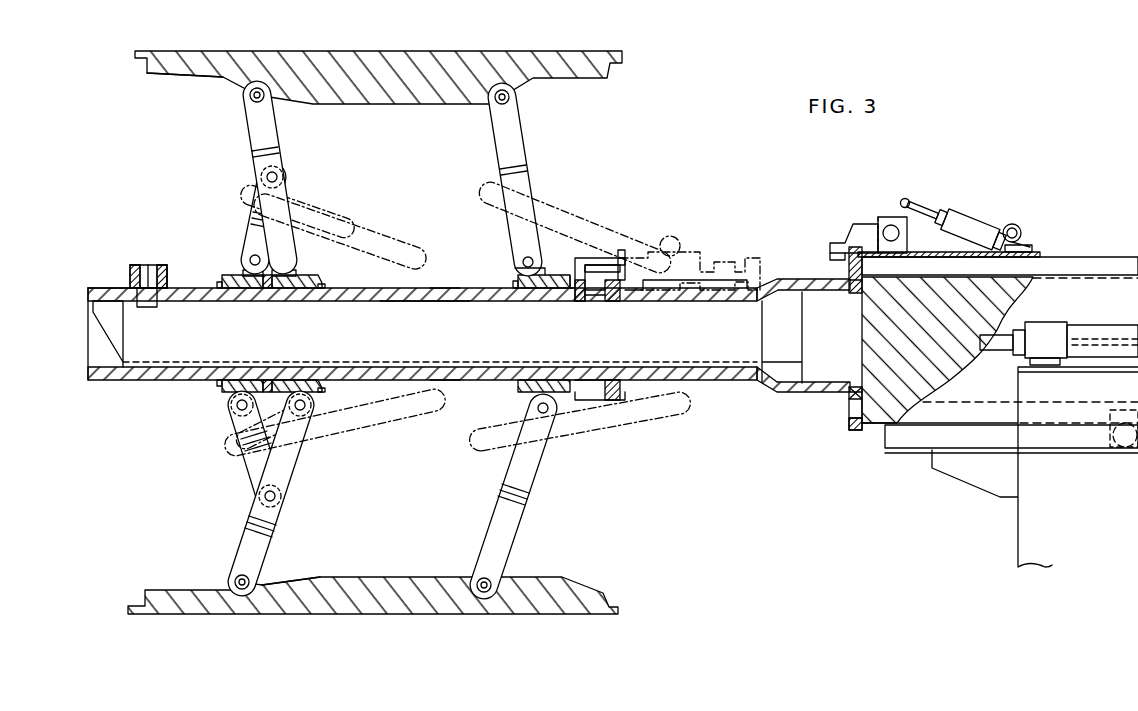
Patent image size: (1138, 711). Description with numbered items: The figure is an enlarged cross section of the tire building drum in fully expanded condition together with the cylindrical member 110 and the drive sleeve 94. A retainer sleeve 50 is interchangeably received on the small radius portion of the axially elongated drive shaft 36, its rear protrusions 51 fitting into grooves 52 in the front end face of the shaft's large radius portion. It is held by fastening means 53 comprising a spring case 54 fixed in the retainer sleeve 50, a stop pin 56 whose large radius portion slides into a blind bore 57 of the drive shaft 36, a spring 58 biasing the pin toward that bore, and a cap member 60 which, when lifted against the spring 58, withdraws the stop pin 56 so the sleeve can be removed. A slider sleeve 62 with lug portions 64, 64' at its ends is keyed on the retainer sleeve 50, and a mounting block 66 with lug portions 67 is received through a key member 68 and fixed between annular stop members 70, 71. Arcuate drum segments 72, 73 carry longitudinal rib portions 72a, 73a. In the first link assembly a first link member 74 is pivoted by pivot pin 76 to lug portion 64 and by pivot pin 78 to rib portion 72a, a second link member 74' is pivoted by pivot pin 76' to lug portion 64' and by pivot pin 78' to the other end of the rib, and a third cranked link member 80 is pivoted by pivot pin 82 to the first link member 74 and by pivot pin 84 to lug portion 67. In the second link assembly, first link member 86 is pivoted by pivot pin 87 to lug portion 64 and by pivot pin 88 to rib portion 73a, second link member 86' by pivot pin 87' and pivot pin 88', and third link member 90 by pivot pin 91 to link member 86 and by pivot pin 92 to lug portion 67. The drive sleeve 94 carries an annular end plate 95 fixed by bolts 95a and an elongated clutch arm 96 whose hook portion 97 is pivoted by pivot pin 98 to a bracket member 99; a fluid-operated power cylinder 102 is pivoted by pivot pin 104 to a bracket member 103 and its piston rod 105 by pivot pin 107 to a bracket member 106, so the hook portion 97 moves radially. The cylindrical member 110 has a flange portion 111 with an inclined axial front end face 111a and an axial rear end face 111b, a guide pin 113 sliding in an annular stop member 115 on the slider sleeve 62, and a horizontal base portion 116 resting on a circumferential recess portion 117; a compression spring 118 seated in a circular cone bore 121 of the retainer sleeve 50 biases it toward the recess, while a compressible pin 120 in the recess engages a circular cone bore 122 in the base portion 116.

The axially elongated drive shaft 36 is at (347, 340).
The retainer sleeve 50 is at (400, 301).
The protrusions 51 is at (855, 295).
The grooves 52 is at (865, 270).
The fastening means 53 is at (145, 262).
The spring case 54 is at (168, 283).
The stop pin 56 is at (160, 267).
The blind bore 57 is at (150, 307).
The spring 58 is at (128, 286).
The cap member 60 is at (133, 265).
The slider sleeve 62 is at (440, 287).
The lug portion 64 is at (320, 314).
The lug portion 64' is at (503, 321).
The mounting block 66 is at (240, 290).
The lug portion 67 is at (245, 272).
The key member 68 is at (242, 380).
The annular stop member 70 is at (225, 286).
The annular stop member 71 is at (265, 288).
The arcuate drum segment 72 is at (437, 50).
The rib portion 72a is at (225, 78).
The arcuate drum segment 73 is at (375, 614).
The rib portion 73a is at (325, 565).
The first link member 74 is at (339, 182).
The second link member 74' is at (574, 185).
The pivot pin 76 is at (305, 252).
The pivot pin 76' is at (509, 258).
The pivot pin 78 is at (278, 106).
The pivot pin 78' is at (530, 97).
The third cranked link member 80 is at (258, 215).
The pivot pin 82 is at (280, 177).
The pivot pin 84 is at (252, 255).
The first link member 86 is at (335, 485).
The second link member 86' is at (580, 488).
The pivot pin 87 is at (323, 397).
The pivot pin 87' is at (564, 422).
The pivot pin 88 is at (221, 565).
The pivot pin 88' is at (512, 574).
The third link member 90 is at (255, 460).
The pivot pin 91 is at (276, 496).
The pivot pin 92 is at (237, 410).
The drive sleeve 94 is at (1098, 257).
The annular end plate 95 is at (848, 410).
The bolts 95a is at (858, 430).
The elongated clutch arm 96 is at (845, 235).
The hook portion 97 is at (832, 254).
The pivot pin 98 is at (900, 233).
The bracket member 99 is at (870, 222).
The fluid-operated power cylinder 102 is at (995, 222).
The bracket member 103 is at (1035, 248).
The pivot pin 104 is at (1013, 230).
The piston rod 105 is at (965, 215).
The bracket member 106 is at (878, 218).
The pivot pin 107 is at (922, 192).
The cylindrical member 110 is at (600, 255).
The flange portion 111 is at (625, 262).
The axial front end face 111a is at (618, 255).
The axial rear end face 111b is at (630, 255).
The guide pin 113 is at (605, 301).
The annular stop member 115 is at (615, 301).
The horizontal base portion 116 is at (575, 275).
The circumferential recess portion 117 is at (560, 275).
The compression spring 118 is at (640, 290).
The compressible pin 120 is at (575, 295).
The circular cone bore 121 is at (585, 301).
The circular cone bore 122 is at (560, 290).